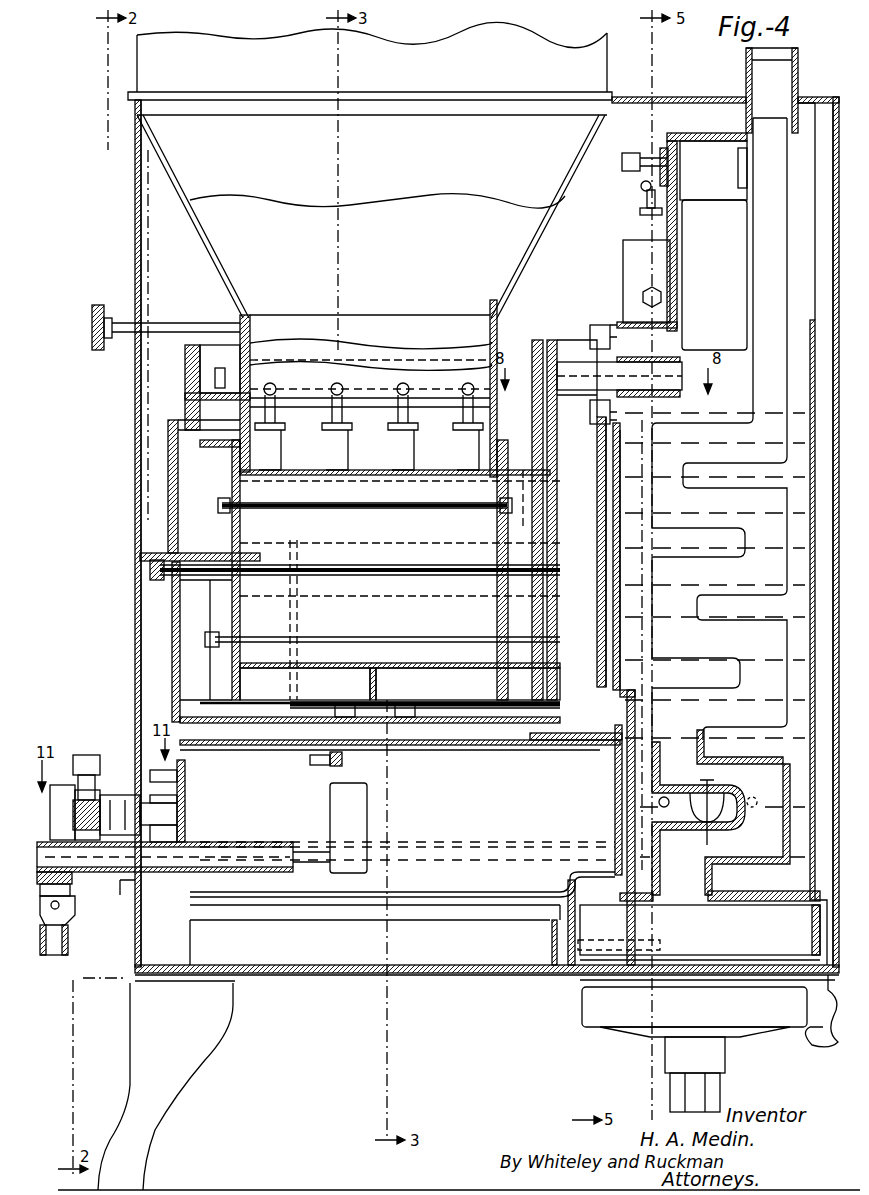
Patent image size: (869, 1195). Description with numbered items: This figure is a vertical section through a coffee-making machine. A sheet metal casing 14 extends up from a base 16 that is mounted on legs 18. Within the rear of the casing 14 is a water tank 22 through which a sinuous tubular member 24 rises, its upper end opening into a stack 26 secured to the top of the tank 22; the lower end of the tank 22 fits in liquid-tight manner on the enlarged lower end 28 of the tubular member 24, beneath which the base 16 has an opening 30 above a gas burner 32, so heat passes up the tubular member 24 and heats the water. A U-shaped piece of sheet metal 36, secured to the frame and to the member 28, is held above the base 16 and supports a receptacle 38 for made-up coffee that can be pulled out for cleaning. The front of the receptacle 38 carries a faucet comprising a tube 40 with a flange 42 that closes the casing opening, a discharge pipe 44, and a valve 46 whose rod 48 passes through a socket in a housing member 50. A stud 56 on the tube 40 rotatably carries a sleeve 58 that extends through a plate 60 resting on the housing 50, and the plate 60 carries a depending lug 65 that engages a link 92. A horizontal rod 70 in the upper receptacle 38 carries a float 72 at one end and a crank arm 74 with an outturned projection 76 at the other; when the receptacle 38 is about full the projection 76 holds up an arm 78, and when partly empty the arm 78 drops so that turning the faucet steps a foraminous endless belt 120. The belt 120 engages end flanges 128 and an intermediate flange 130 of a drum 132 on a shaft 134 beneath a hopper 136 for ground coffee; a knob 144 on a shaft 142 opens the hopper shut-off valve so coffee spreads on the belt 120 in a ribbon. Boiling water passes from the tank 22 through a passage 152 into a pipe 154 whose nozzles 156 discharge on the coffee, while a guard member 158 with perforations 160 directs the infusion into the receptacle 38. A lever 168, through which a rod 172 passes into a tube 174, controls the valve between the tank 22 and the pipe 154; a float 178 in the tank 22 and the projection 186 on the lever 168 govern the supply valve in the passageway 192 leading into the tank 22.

The casing 14 is at (136, 428).
The base 16 is at (345, 975).
The legs 18 is at (188, 1056).
The water tank 22 is at (808, 305).
The sinuous tubular member 24 is at (726, 522).
The stack 26 is at (798, 68).
The enlarged lower end of tubular member 28 is at (748, 903).
The opening 30 is at (580, 985).
The gas burner 32 is at (598, 1010).
The piece of sheet metal 36 is at (508, 898).
The receptacle 38 is at (442, 892).
The tube 40 is at (268, 842).
The flange 42 is at (135, 930).
The discharge pipe 44 is at (58, 955).
The valve 46 is at (70, 892).
The rod 48 is at (72, 912).
The housing member 50 is at (62, 880).
The stud 56 is at (87, 790).
The sleeve 58 is at (96, 755).
The plate 60 is at (60, 785).
The depending lug 65 is at (112, 795).
The horizontal rod 70 is at (305, 760).
The float 72 is at (360, 806).
The crank arm 74 is at (186, 787).
The outturned projection 76 is at (160, 812).
The arm 78 is at (180, 798).
The link 92 is at (175, 820).
The foraminous endless belt 120 is at (312, 700).
The end flanges 128 is at (230, 690).
The intermediate flange 130 is at (378, 682).
The drum 132 is at (470, 668).
The shaft 134 is at (372, 565).
The hopper 136 is at (548, 183).
The shaft 142 is at (180, 323).
The knob 144 is at (98, 305).
The passage 152 is at (662, 396).
The pipe 154 is at (392, 382).
The nozzles 156 is at (332, 452).
The guard member 158 is at (458, 730).
The perforations 160 is at (345, 710).
The lever 168 is at (640, 188).
The rod 172 is at (645, 200).
The tube 174 is at (623, 242).
The float 178 is at (735, 222).
The projection 186 is at (650, 216).
The passageway 192 is at (720, 785).